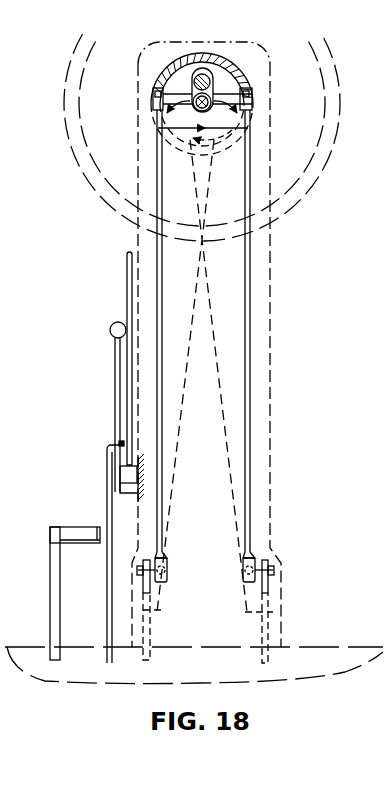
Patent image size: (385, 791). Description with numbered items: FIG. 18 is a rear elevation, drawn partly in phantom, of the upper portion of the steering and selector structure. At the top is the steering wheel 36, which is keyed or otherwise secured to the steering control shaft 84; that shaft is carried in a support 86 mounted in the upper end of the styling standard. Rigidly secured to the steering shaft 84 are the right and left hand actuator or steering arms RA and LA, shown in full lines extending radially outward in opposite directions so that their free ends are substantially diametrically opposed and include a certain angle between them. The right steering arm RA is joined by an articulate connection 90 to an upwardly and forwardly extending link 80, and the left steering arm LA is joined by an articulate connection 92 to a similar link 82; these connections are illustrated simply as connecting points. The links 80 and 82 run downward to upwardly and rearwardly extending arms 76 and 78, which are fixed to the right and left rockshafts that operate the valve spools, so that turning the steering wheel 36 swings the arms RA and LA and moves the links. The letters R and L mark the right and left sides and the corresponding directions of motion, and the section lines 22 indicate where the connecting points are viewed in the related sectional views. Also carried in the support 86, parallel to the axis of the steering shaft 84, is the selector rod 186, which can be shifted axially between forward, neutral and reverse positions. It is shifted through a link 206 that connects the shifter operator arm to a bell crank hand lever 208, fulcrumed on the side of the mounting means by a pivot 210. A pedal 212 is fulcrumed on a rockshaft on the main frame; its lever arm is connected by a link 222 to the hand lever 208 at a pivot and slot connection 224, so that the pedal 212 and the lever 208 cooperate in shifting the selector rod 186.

The steering wheel 36 is at (66, 136).
The section line 22 is at (107, 104).
The support 86 is at (180, 60).
The selector rod 186 is at (208, 77).
The steering control member or shaft 84 is at (211, 98).
The articulate connection 92 is at (158, 98).
The articulate connection 90 is at (248, 110).
The left hand actuator arm or steering arm LA is at (165, 118).
The right hand actuator arm or steering arm RA is at (242, 120).
The left direction L is at (48, 100).
The right direction R is at (355, 100).
The link means or link 80 is at (225, 432).
The link means or link 82 is at (163, 528).
The arm 78 is at (147, 587).
The arm 76 is at (265, 588).
The link 206 is at (128, 293).
The bell crank lever 208 is at (110, 330).
The pivot and slot connection 224 is at (119, 444).
The link 222 is at (108, 452).
The pivot 210 is at (128, 493).
The pedal 212 is at (52, 570).